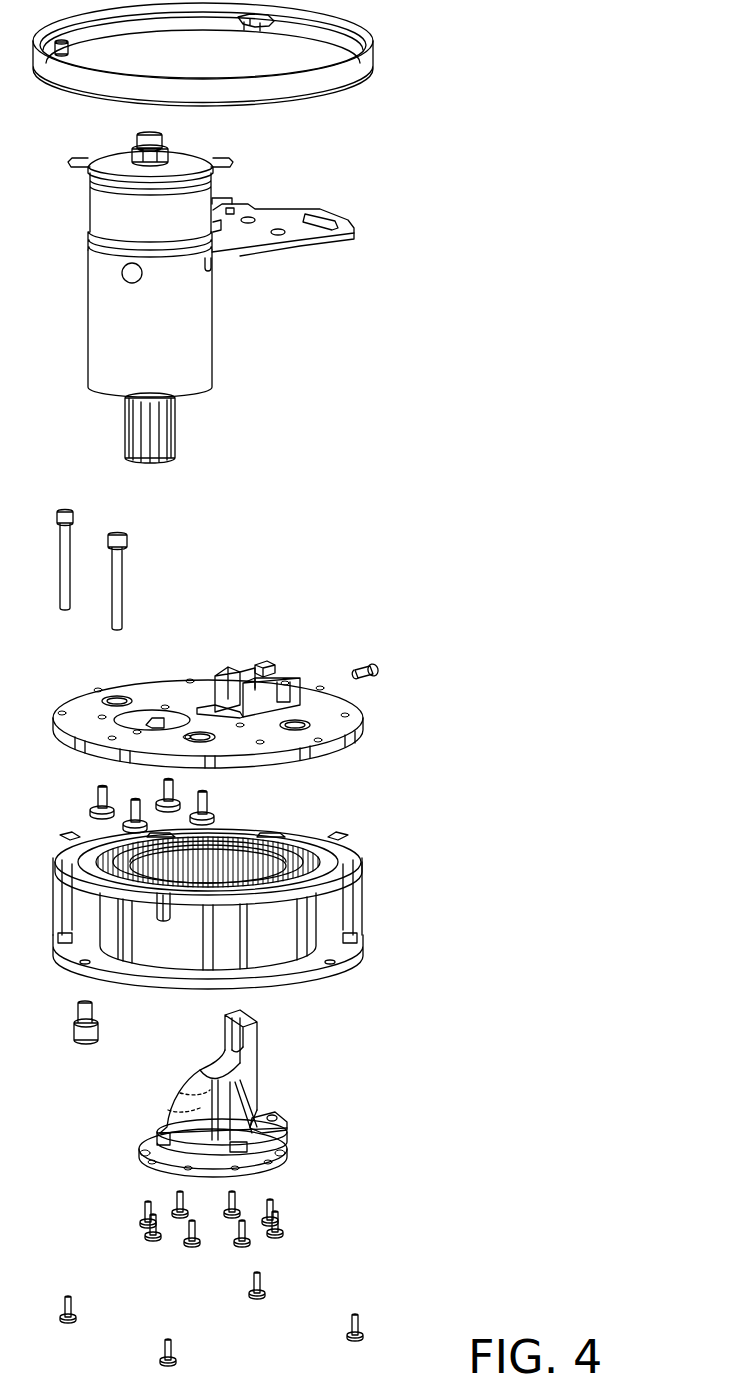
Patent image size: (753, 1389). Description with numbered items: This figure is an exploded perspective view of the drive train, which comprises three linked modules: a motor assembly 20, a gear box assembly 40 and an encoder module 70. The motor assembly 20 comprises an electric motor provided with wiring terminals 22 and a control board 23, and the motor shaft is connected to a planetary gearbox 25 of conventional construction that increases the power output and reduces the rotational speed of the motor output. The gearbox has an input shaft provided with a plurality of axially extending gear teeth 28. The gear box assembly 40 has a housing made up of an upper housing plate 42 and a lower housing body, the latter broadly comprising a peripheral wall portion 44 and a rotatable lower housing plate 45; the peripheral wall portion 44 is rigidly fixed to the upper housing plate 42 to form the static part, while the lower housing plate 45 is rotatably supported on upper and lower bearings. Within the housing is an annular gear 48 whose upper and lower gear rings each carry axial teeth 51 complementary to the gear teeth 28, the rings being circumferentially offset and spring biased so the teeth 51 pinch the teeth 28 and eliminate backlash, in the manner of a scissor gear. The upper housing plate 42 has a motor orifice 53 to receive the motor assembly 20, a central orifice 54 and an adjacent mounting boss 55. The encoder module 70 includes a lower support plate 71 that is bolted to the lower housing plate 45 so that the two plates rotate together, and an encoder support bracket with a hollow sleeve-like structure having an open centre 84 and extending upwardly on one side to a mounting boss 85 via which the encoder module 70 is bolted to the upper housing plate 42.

The motor assembly 20 is at (286, 278).
The wiring terminals 22 is at (100, 197).
The control board 23 is at (292, 218).
The planetary gearbox 25 is at (100, 337).
The gear teeth 28 is at (173, 433).
The gear box assembly 40 is at (346, 824).
The upper housing plate 42 is at (338, 708).
The peripheral wall portion 44 is at (290, 935).
The lower housing plate 45 is at (355, 952).
The annular gear 48 is at (277, 848).
The axial teeth 51 is at (185, 880).
The motor orifice 53 is at (137, 720).
The central orifice 54 is at (207, 713).
The mounting boss 55 is at (262, 690).
The encoder module 70 is at (307, 1126).
The lower support plate 71 is at (285, 1160).
The open centre 84 is at (197, 1092).
The mounting boss 85 is at (260, 1032).